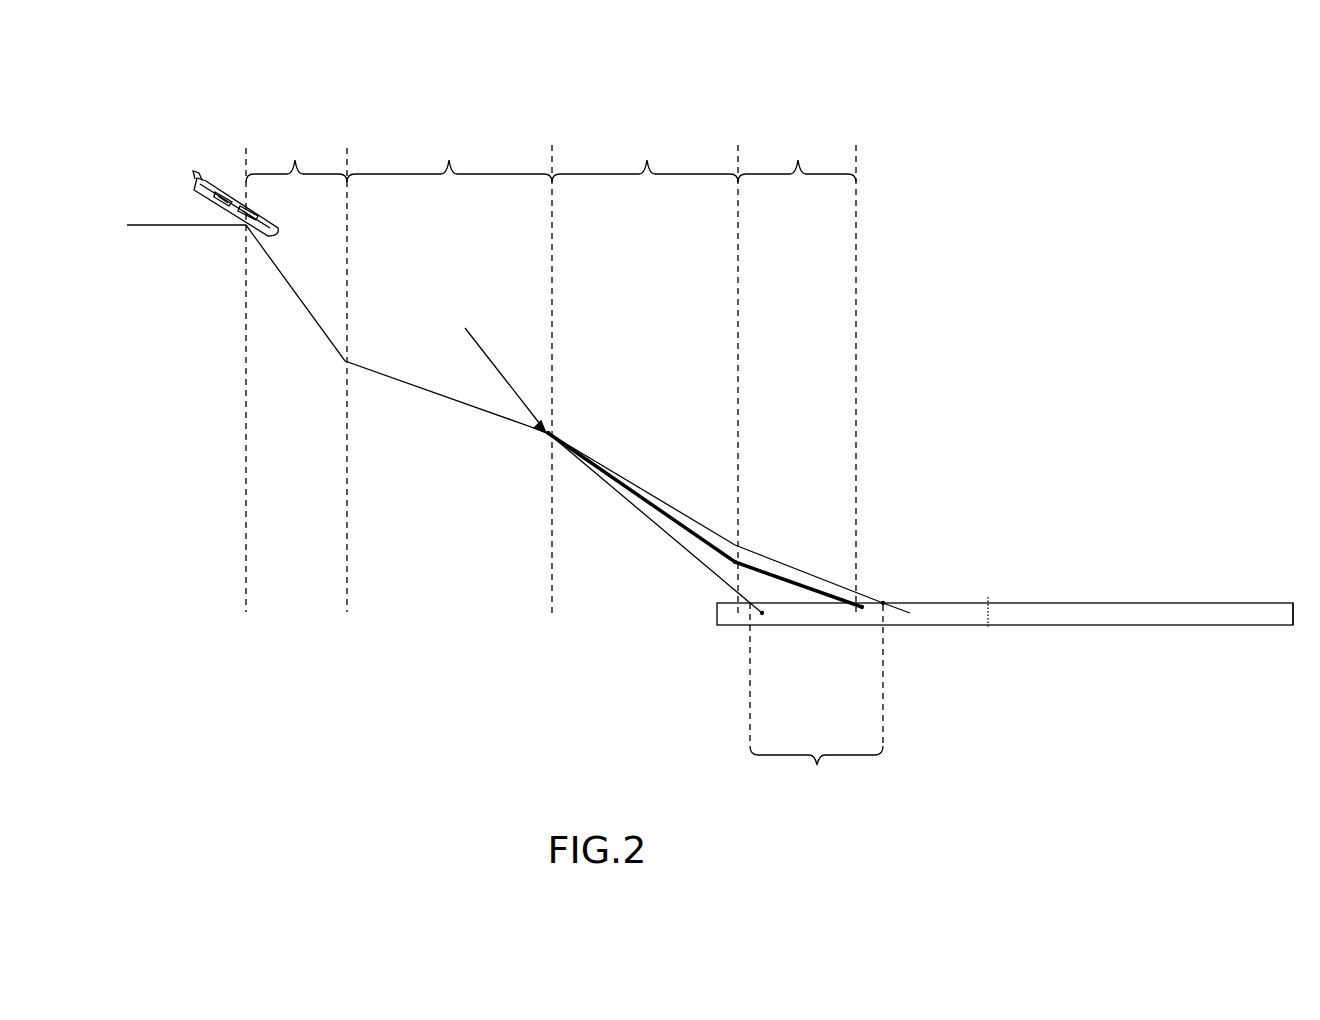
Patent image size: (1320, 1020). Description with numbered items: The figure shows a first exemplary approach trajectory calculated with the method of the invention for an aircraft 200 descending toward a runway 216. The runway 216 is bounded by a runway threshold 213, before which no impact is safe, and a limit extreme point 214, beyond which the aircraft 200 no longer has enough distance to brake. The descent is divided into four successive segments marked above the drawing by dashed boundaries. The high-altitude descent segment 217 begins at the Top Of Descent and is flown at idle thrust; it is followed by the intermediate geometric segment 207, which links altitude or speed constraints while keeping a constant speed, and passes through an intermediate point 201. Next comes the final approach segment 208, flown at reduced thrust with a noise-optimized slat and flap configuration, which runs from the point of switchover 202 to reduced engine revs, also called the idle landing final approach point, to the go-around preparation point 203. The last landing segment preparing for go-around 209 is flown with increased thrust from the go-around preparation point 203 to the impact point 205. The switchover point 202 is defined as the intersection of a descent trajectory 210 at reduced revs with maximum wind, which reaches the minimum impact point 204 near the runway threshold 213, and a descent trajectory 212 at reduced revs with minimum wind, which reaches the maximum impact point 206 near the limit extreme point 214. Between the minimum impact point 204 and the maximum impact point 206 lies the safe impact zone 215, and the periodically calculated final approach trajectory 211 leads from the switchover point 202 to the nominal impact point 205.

The aircraft 200 is at (200, 172).
The intermediate approach point 201 is at (343, 363).
The point of switchover to reduced engine revs 202 is at (545, 437).
The go-around preparation point 203 is at (740, 557).
The minimum impact point 204 is at (753, 605).
The impact point 205 is at (857, 607).
The maximum impact point 206 is at (890, 605).
The intermediate geometric segment 207 is at (449, 160).
The final approach segment 208 is at (647, 160).
The landing segment preparing for go-around 209 is at (798, 160).
The descent trajectory at reduced engine revs with a maximum wind 210 is at (668, 535).
The final approach trajectory 211 is at (663, 508).
The descent trajectory at reduced engine revs with a minimum wind 212 is at (812, 573).
The runway threshold 213 is at (717, 617).
The limit extreme point 214 is at (989, 628).
The safe impact zone 215 is at (817, 765).
The runway 216 is at (1280, 615).
The high-altitude descent segment 217 is at (295, 160).